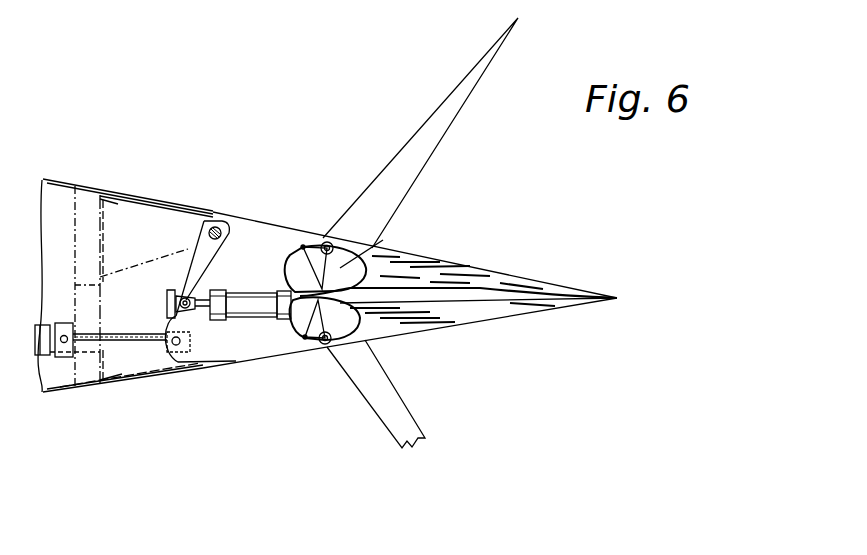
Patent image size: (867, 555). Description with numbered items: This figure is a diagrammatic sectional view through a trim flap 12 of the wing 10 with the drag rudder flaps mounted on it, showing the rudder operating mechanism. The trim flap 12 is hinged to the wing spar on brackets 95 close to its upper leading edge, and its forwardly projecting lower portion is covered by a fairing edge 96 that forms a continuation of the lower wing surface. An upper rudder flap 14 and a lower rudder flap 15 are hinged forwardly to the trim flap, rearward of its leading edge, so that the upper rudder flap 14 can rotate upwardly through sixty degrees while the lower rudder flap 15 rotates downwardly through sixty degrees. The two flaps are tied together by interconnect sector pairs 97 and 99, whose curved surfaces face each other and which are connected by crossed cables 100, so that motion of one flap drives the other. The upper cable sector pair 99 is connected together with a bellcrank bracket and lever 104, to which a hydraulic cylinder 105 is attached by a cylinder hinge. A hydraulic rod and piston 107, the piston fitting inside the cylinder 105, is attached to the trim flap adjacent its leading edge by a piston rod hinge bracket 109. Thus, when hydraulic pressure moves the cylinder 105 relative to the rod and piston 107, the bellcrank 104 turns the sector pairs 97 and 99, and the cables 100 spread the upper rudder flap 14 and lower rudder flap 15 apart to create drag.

The wing body 10 is at (118, 187).
The trim flap 12 is at (262, 228).
The upper rudder flap 14 is at (408, 142).
The lower rudder flap 15 is at (468, 318).
The brackets 95 is at (167, 222).
The fairing edge 96 is at (147, 377).
The interconnect sector pair 97 is at (316, 339).
The upper cable sector pair 99 is at (288, 259).
The crossed cable 100 is at (291, 256).
The bellcrank bracket and lever 104 is at (293, 289).
The hydraulic cylinder 105 is at (240, 320).
The hydraulic rod and piston 107 is at (190, 301).
The piston rod hinge bracket 109 is at (165, 312).